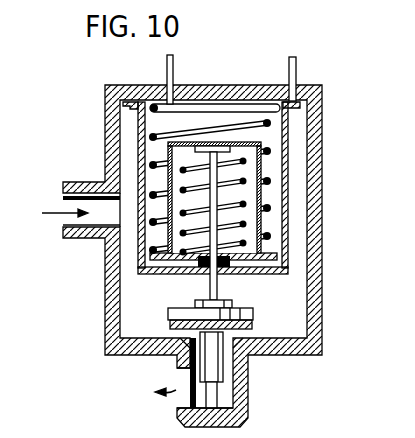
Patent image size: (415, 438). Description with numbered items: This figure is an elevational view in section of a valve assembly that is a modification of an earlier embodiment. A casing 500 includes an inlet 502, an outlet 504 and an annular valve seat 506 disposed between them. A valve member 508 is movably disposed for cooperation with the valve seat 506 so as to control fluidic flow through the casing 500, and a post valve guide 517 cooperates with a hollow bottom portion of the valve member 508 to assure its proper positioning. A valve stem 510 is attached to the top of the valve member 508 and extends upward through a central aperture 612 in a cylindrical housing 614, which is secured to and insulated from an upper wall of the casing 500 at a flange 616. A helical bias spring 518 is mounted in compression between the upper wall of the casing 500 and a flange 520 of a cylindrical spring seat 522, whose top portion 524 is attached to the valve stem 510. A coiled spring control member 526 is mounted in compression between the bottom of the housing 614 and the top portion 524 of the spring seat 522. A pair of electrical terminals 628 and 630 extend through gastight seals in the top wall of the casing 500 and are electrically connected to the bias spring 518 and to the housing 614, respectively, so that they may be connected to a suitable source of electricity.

The casing 500 is at (322, 121).
The inlet 502 is at (72, 224).
The outlet 504 is at (182, 402).
The annular valve seat 506 is at (171, 333).
The valve member 508 is at (255, 322).
The valve stem 510 is at (247, 172).
The post valve guide 517 is at (212, 395).
The helical bias spring 518 is at (147, 250).
The flange 520 is at (152, 270).
The cylindrical spring seat 522 is at (261, 224).
The top portion 524 is at (223, 140).
The coiled spring control member 526 is at (185, 181).
The central aperture 612 is at (208, 272).
The cylindrical housing 614 is at (138, 137).
The flange 616 is at (130, 112).
The electrical terminal 628 is at (167, 65).
The electrical terminal 630 is at (296, 66).